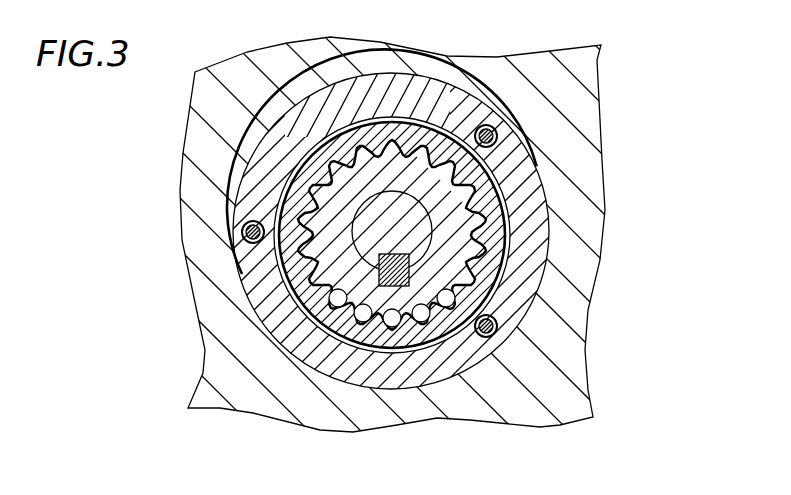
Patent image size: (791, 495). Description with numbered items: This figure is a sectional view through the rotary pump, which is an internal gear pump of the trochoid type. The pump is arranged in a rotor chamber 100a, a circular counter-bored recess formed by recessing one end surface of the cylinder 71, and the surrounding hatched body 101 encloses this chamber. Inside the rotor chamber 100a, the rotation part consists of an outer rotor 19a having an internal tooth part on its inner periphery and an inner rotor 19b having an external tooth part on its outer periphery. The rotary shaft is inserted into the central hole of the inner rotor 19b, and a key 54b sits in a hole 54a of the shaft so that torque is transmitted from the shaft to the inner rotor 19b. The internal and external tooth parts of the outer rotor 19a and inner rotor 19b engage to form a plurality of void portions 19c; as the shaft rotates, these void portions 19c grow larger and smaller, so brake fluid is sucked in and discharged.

The housing 101 is at (597, 97).
The rotor chamber 100a is at (587, 317).
The cylinder 71 is at (548, 248).
The key 54b is at (500, 183).
The hole 54a is at (510, 207).
The void portions 19c is at (310, 343).
The outer rotor 19a is at (340, 330).
The inner rotor 19b is at (445, 330).